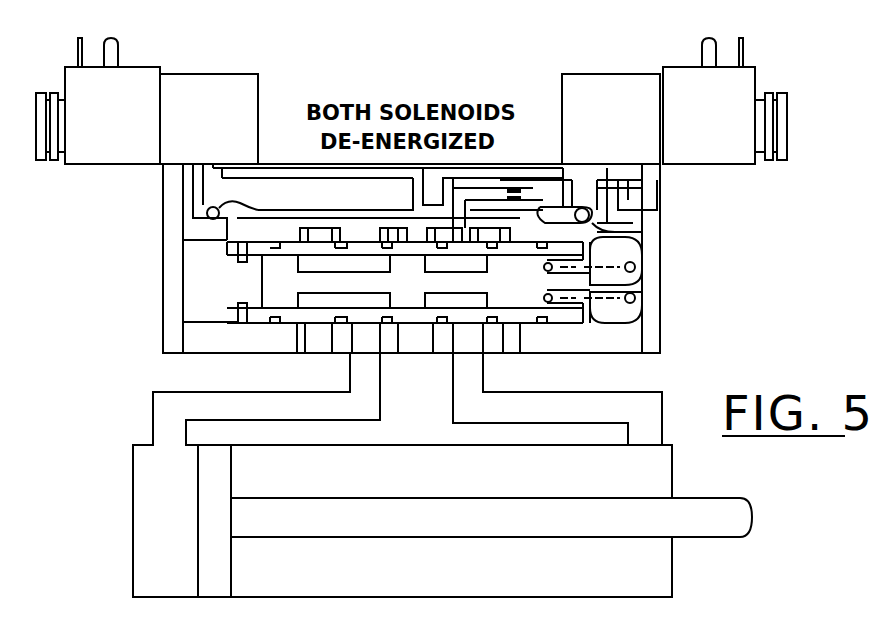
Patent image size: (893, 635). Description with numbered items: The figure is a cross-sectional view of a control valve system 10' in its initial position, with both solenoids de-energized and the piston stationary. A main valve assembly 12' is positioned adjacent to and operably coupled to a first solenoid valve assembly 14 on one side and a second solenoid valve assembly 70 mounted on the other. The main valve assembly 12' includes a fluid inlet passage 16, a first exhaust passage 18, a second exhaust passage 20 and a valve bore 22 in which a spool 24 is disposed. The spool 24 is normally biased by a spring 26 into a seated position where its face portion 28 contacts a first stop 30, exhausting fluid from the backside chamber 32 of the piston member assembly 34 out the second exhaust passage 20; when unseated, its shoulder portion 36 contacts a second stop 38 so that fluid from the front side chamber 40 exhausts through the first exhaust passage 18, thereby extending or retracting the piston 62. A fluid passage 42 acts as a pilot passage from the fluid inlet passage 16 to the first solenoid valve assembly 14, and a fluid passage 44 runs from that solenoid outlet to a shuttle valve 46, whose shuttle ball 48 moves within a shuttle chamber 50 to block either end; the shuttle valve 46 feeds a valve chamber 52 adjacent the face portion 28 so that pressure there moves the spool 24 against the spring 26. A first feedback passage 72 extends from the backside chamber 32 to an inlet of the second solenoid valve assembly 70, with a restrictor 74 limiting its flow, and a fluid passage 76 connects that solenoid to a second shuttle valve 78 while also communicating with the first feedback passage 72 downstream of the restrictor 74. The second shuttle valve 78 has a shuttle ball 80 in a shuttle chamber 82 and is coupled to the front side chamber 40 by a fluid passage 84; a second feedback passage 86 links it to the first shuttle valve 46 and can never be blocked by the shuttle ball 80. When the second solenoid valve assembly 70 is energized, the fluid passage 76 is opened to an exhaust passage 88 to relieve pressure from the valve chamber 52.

The control valve system 10' is at (450, 67).
The main valve assembly 12' is at (531, 133).
The first solenoid valve assembly 14 is at (96, 165).
The fluid inlet passage 16 is at (408, 352).
The first exhaust passage 18 is at (508, 350).
The second exhaust passage 20 is at (303, 350).
The valve bore 22 is at (214, 281).
The spool 24 is at (650, 287).
The spring 26 is at (640, 266).
The face portion 28 is at (252, 315).
The first stop 30 is at (240, 313).
The backside chamber 32 is at (142, 515).
The piston member assembly 34 is at (216, 600).
The shoulder portion 36 is at (550, 300).
The second stop 38 is at (608, 232).
The front side chamber 40 is at (662, 455).
The fluid passage 42 is at (273, 177).
The fluid passage 44 is at (195, 172).
The shuttle valve 46 is at (240, 203).
The shuttle ball 48 is at (213, 206).
The shuttle chamber 50 is at (335, 194).
The valve chamber 52 is at (195, 258).
The piston 62 is at (713, 489).
The second solenoid valve assembly 70 is at (622, 82).
The first feedback passage 72 is at (380, 188).
The restrictor 74 is at (522, 184).
The fluid passage 76 is at (645, 183).
The second shuttle valve 78 is at (580, 206).
The shuttle ball 80 is at (592, 207).
The shuttle chamber 82 is at (552, 204).
The fluid passage 84 is at (480, 204).
The second feedback passage 86 is at (313, 208).
The exhaust passage 88 is at (657, 217).